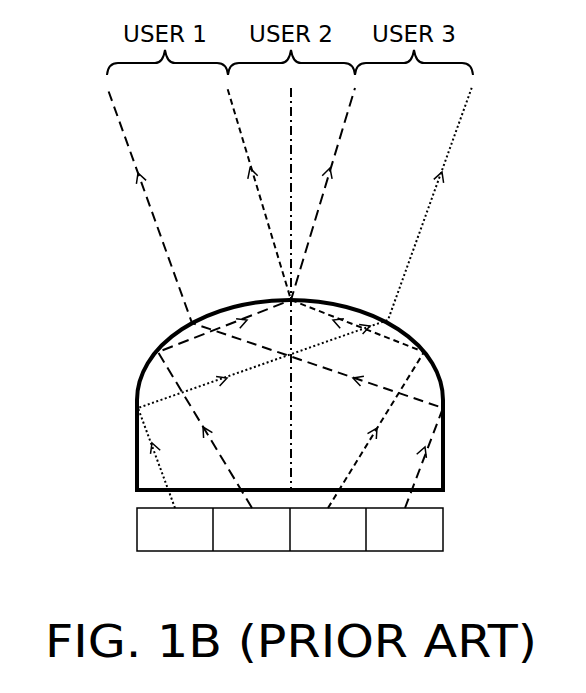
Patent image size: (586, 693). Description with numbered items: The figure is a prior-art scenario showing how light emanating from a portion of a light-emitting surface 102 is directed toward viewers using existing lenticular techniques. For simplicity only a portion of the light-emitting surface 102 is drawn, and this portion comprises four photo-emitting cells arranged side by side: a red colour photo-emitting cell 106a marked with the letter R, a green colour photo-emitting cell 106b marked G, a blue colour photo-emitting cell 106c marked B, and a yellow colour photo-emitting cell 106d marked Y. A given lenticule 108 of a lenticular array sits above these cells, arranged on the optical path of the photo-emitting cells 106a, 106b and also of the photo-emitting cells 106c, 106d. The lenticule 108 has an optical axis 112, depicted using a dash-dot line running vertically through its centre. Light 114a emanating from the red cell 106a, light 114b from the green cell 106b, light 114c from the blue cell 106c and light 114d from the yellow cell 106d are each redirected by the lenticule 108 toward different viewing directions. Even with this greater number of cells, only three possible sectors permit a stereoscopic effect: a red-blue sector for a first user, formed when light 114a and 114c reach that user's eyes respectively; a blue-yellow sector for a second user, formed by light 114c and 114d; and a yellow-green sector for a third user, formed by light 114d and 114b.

The light-emitting surface 102 is at (128, 508).
The photo-emitting cell 106a is at (437, 530).
The photo-emitting cell 106b is at (142, 528).
The photo-emitting cell 106c is at (325, 550).
The photo-emitting cell 106d is at (250, 550).
The lenticule 108 is at (443, 372).
The optical axis 112 is at (292, 152).
The light 114a is at (168, 254).
The light 114b is at (411, 256).
The light 114c is at (266, 218).
The light 114d is at (314, 222).